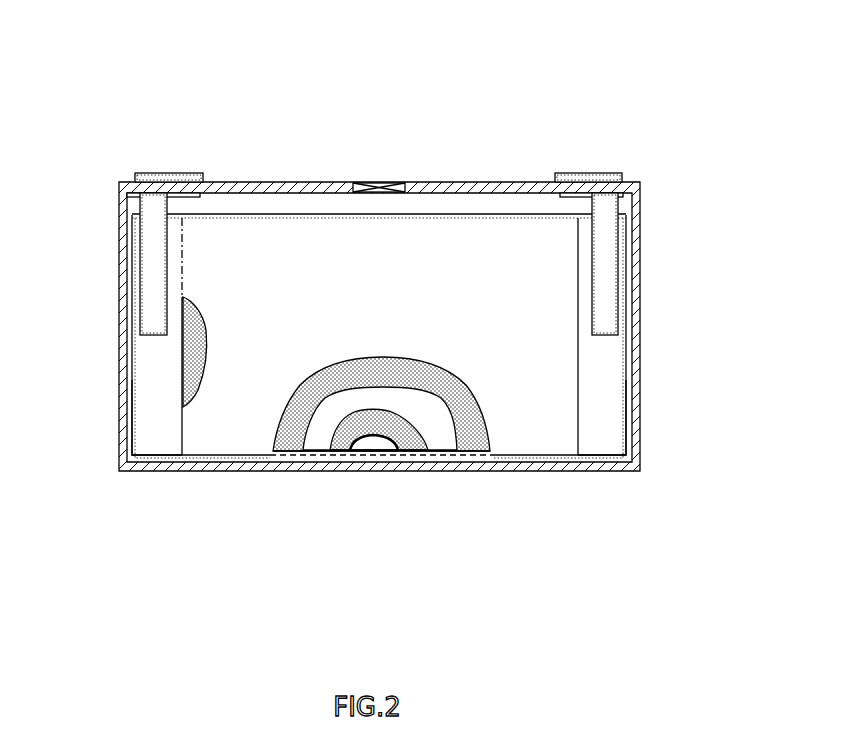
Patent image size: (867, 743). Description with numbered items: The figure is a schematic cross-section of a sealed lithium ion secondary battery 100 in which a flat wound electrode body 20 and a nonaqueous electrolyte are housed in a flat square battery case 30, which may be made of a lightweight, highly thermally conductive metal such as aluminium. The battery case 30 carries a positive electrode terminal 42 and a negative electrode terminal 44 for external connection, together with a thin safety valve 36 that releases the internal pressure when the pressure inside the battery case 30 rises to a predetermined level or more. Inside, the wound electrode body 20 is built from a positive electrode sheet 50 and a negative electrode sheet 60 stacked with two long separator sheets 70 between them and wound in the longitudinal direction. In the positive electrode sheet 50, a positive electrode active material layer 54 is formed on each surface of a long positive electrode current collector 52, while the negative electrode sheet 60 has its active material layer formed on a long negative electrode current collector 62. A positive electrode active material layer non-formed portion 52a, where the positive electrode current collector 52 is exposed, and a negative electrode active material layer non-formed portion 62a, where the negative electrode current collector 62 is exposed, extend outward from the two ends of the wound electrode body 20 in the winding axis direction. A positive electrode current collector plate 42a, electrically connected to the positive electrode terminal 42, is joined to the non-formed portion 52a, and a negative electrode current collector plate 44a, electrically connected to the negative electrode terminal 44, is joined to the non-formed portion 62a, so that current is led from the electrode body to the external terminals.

The lithium ion secondary battery 100 is at (657, 110).
The wound electrode body 20 is at (303, 212).
The battery case 30 is at (643, 292).
The safety valve 36 is at (388, 184).
The positive electrode terminal 42 is at (129, 226).
The positive electrode current collector plate 42a is at (153, 255).
The negative electrode terminal 44 is at (638, 226).
The negative electrode current collector plate 44a is at (608, 248).
The positive electrode sheet 50 is at (289, 453).
The positive electrode current collector 52 is at (160, 336).
The positive electrode active material layer non-formed portion 52a is at (145, 425).
The positive electrode active material layer 54 is at (207, 330).
The negative electrode sheet 60 is at (342, 442).
The negative electrode current collector 62 is at (605, 336).
The negative electrode active material layer non-formed portion 62a is at (608, 422).
The separator sheet 70 is at (223, 405).